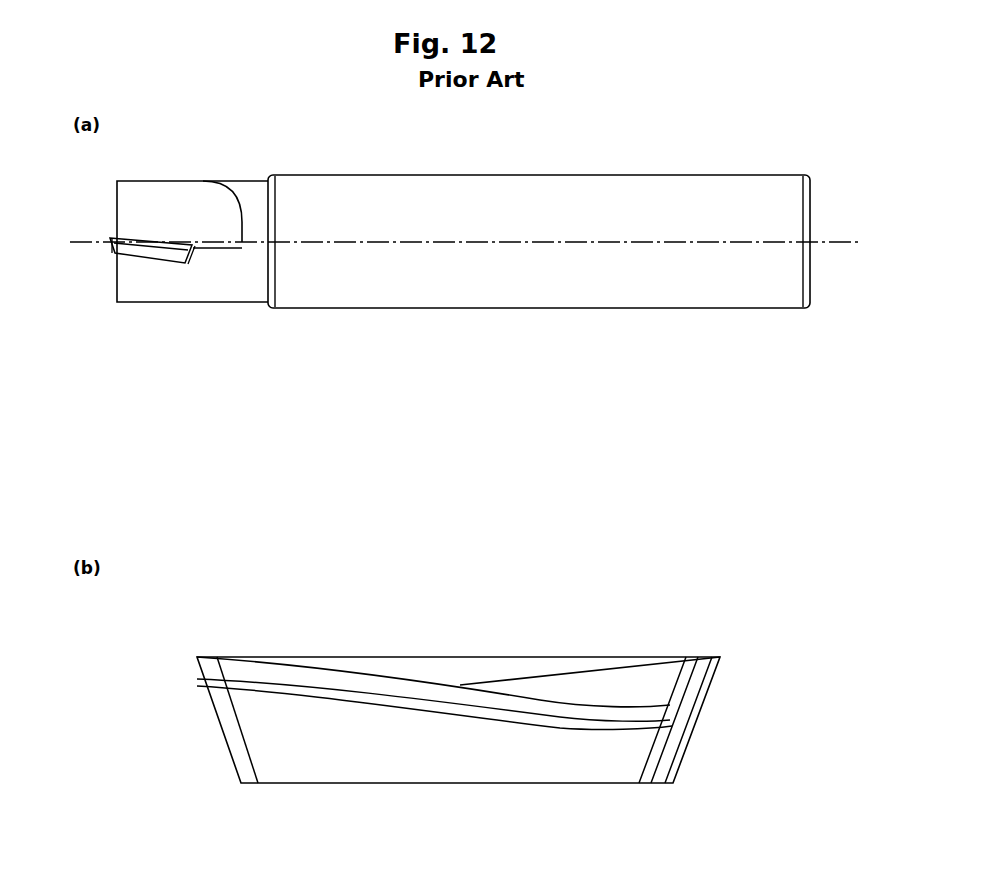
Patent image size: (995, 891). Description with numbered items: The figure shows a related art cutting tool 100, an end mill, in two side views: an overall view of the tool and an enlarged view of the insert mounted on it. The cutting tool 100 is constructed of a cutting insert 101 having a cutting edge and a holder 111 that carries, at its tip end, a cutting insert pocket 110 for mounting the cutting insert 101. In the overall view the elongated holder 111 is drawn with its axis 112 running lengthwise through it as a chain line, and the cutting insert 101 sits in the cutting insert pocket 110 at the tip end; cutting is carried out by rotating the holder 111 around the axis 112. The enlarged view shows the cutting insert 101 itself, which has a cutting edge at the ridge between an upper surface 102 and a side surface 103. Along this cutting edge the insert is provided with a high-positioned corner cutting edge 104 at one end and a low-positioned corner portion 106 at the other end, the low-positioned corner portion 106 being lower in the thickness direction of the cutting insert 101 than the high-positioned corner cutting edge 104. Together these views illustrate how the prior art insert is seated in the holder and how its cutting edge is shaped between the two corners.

The cutting tool 100 is at (466, 226).
The cutting insert 101 is at (119, 254).
The upper surface 102 is at (602, 677).
The side surface 103 is at (262, 733).
The high-positioned corner cutting edge 104 is at (197, 657).
The low-positioned corner portion 106 is at (668, 705).
The cutting insert pocket 110 is at (190, 261).
The holder 111 is at (550, 198).
The axis 112 is at (646, 243).